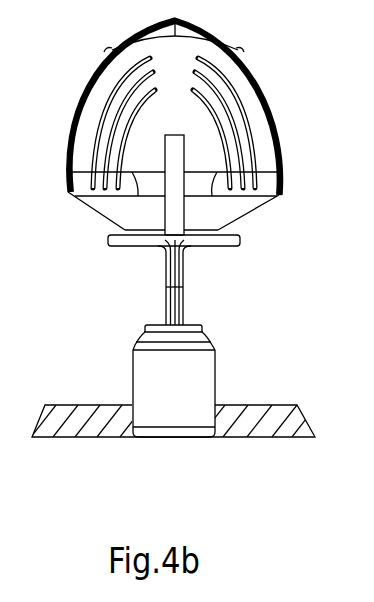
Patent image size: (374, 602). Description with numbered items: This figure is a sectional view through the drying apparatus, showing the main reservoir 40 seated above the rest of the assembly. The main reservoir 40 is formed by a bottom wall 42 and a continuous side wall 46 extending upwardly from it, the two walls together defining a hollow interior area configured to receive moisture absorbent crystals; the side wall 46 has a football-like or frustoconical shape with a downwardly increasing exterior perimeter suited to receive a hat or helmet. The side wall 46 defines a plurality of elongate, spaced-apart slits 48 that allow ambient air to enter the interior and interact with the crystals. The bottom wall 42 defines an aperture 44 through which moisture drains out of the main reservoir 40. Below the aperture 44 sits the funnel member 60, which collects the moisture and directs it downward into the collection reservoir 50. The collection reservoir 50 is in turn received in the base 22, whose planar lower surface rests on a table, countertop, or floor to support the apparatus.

The main reservoir 40 is at (173, 126).
The side wall 46 is at (120, 70).
The slits 48 is at (95, 147).
The bottom wall 42 is at (122, 213).
The aperture 44 is at (225, 185).
The funnel member 60 is at (118, 256).
The collection reservoir 50 is at (193, 375).
The base 22 is at (261, 428).